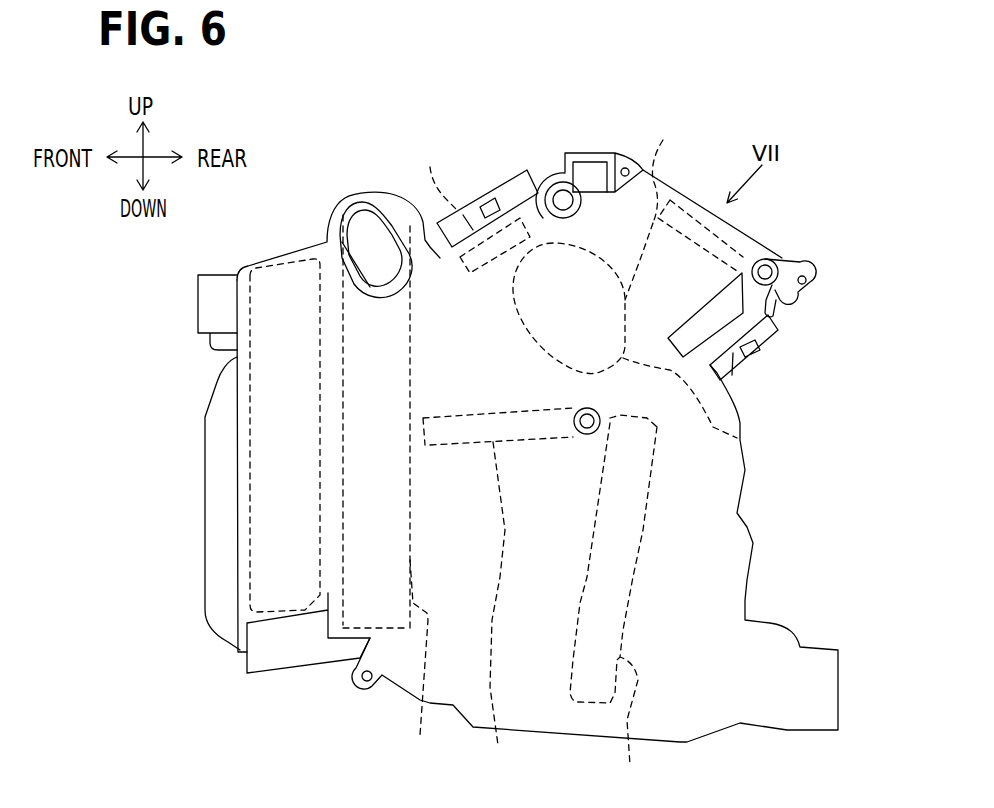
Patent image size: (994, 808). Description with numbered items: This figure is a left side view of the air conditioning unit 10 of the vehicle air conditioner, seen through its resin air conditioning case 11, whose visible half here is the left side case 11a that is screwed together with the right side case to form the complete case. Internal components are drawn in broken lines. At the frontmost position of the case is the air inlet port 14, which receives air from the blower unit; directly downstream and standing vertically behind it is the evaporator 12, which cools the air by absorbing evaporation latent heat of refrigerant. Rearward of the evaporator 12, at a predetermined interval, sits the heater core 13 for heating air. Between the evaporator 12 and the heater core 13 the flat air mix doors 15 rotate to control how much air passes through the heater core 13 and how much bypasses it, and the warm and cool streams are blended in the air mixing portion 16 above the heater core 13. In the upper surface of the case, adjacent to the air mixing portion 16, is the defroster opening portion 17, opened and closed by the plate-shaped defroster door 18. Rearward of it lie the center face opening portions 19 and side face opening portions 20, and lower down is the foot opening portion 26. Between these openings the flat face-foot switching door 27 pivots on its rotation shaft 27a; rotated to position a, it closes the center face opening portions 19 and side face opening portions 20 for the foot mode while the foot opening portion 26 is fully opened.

The air conditioning unit 10 is at (527, 149).
The air conditioning case 11 is at (595, 142).
The left side case 11a is at (590, 197).
The evaporator 12 is at (422, 658).
The heater core 13 is at (613, 603).
The air inlet port 14 is at (250, 463).
The air mix doors 15 is at (504, 615).
The air mixing portion 16 is at (740, 438).
The defroster opening portion 17 is at (497, 185).
The defroster door 18 is at (433, 175).
The center face opening portions 19 is at (732, 228).
The side face opening portions 20 is at (700, 236).
The foot opening portion 26 is at (745, 357).
The face-foot switching door 27 is at (745, 260).
The rotation shaft 27a is at (775, 256).
The position a is at (660, 170).